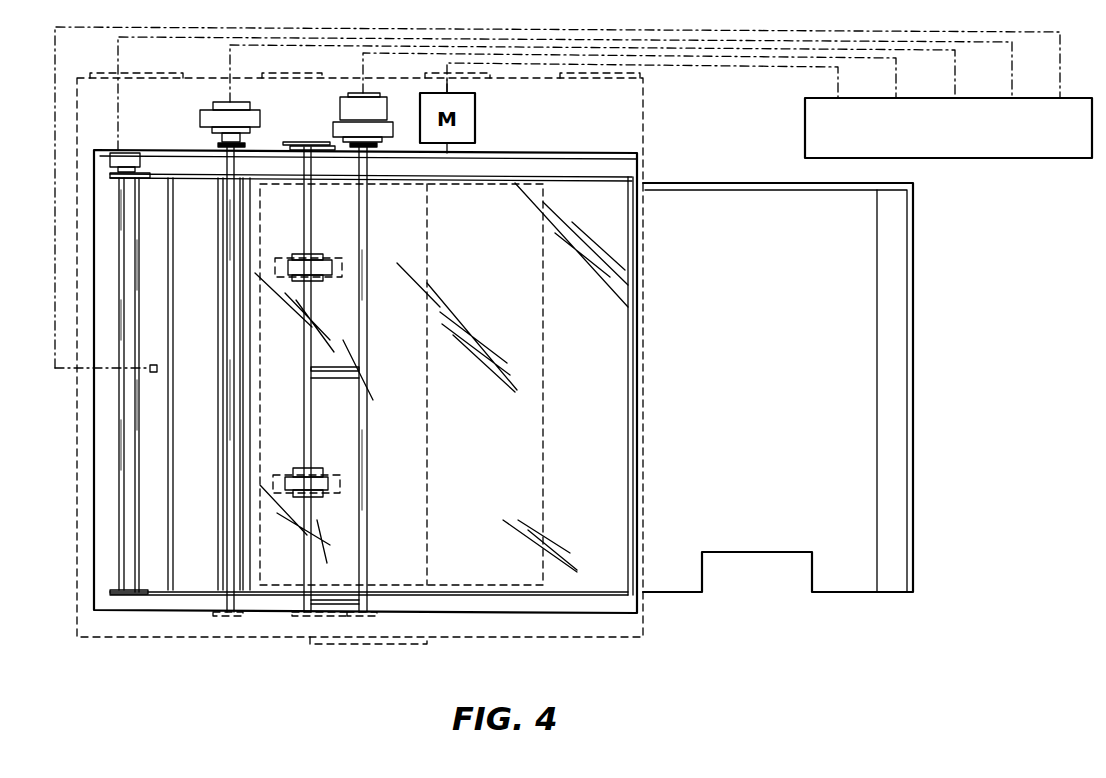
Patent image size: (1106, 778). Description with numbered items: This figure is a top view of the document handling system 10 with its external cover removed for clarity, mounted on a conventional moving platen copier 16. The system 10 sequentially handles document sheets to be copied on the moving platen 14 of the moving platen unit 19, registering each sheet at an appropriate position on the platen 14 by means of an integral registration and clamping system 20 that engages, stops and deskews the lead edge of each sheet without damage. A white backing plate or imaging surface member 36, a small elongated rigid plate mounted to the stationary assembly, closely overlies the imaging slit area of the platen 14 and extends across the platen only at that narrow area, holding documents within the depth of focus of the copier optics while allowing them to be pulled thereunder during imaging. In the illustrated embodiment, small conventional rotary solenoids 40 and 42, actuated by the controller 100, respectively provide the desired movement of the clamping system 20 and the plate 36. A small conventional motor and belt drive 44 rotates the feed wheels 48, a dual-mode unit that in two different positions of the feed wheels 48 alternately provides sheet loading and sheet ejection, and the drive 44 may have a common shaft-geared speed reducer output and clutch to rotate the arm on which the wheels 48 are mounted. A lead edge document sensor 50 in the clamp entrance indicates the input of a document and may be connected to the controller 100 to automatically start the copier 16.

The document handling system 10 is at (643, 638).
The moving platen 14 is at (483, 560).
The moving platen copier 16 is at (43, 264).
The moving platen unit 19 is at (607, 166).
The registration and clamping system 20 is at (160, 452).
The imaging surface member 36 is at (188, 547).
The rotary solenoid 40 is at (132, 162).
The rotary solenoid 42 is at (262, 128).
The motor/belt drive 44 is at (310, 148).
The feed wheels 48 is at (320, 276).
The lead edge document sensor 50 is at (150, 370).
The controller 100 is at (953, 158).